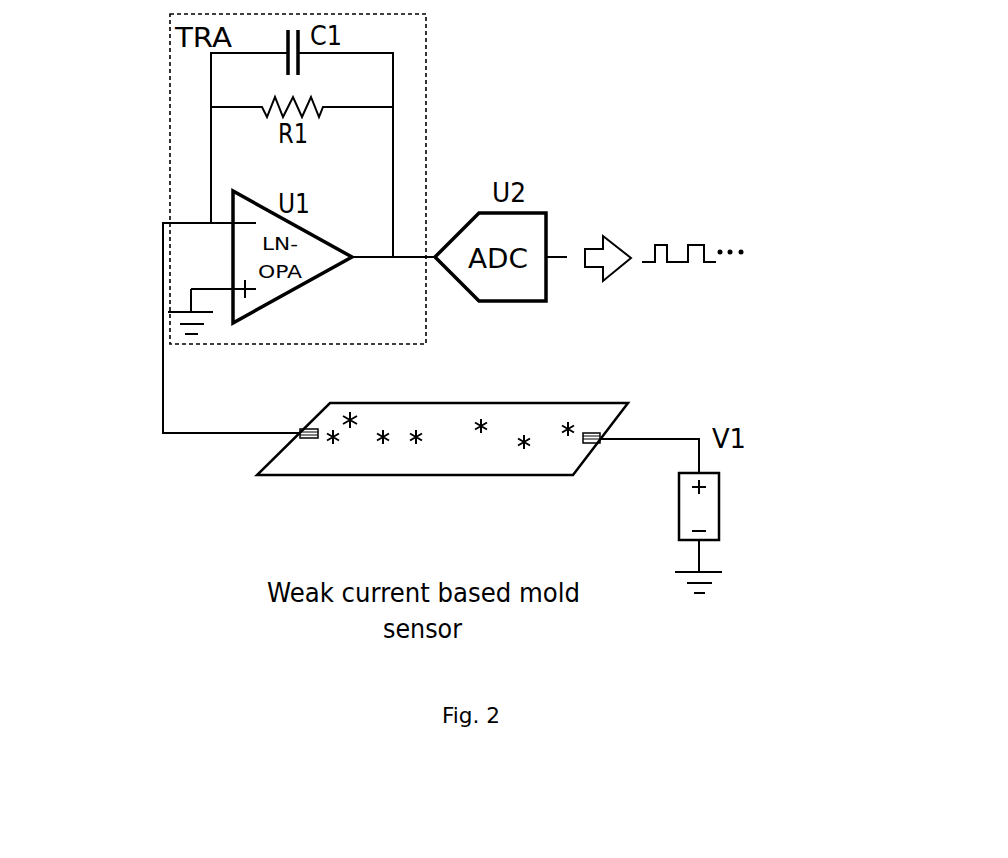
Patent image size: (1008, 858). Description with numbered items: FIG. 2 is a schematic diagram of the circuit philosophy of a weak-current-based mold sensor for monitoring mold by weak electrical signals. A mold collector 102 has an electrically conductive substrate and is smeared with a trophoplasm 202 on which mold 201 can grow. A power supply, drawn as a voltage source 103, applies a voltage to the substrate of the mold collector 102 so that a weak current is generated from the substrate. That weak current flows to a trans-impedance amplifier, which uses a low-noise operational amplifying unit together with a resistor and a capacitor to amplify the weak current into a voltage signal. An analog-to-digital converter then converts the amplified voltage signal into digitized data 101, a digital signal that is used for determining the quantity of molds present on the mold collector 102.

The digitized data 101 is at (752, 248).
The collector 102 is at (530, 395).
The voltage source 103 is at (733, 510).
The mold 201 is at (422, 437).
The trophoplasm 202 is at (293, 468).